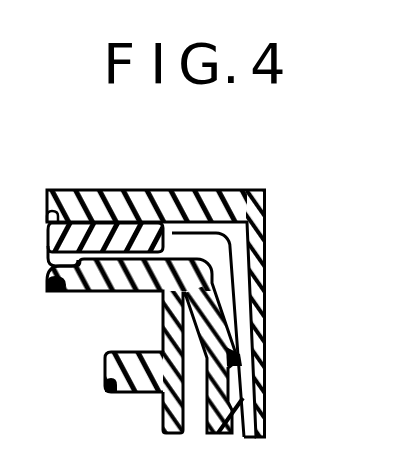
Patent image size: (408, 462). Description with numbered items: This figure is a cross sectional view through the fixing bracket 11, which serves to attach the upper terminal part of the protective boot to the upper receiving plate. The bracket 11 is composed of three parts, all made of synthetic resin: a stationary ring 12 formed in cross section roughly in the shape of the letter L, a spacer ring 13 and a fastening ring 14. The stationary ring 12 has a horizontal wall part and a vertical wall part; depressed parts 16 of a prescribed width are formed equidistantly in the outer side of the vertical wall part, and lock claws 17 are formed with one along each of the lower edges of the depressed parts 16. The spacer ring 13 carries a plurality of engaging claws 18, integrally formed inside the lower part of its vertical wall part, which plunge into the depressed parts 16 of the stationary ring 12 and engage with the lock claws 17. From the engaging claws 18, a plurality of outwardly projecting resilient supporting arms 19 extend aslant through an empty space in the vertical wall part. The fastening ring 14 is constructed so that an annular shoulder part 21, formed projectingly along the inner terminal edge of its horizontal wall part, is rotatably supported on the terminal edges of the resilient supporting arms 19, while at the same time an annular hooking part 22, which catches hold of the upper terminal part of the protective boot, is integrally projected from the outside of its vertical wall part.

The fixing bracket 11 is at (256, 185).
The stationary ring 12 is at (187, 192).
The spacer ring 13 is at (135, 222).
The fastening ring 14 is at (90, 293).
The depressed parts 16 is at (246, 297).
The lock claws 17 is at (240, 404).
The engaging claws 18 is at (241, 385).
The resilient supporting arms 19 is at (222, 316).
The annular shoulder part 21 is at (193, 278).
The annular hooking part 22 is at (112, 374).